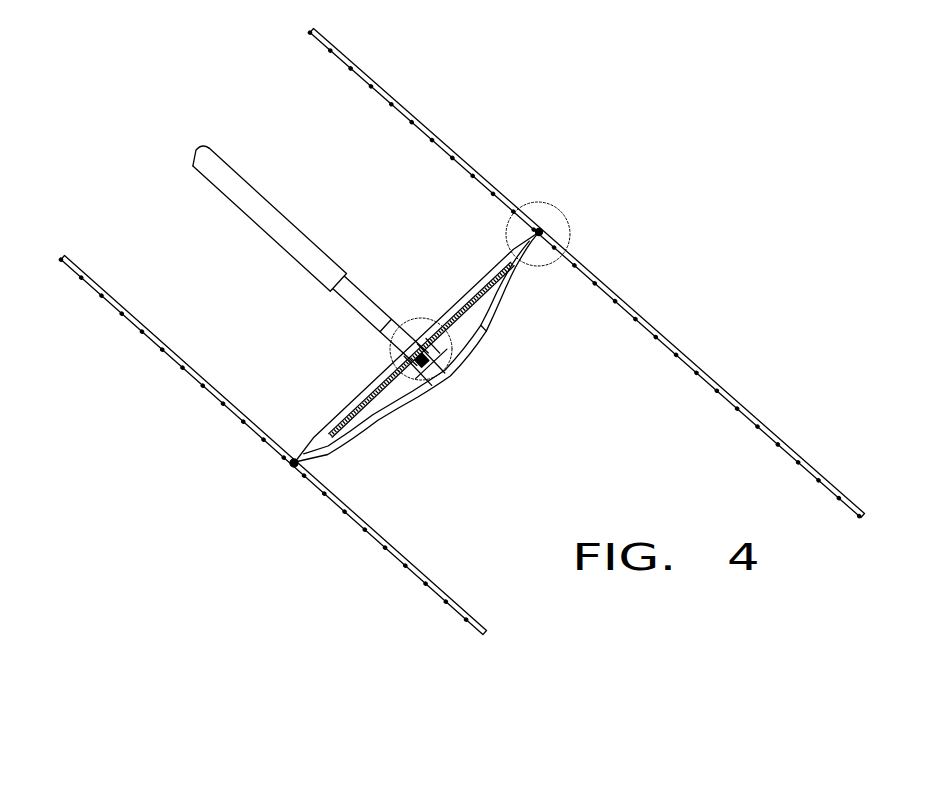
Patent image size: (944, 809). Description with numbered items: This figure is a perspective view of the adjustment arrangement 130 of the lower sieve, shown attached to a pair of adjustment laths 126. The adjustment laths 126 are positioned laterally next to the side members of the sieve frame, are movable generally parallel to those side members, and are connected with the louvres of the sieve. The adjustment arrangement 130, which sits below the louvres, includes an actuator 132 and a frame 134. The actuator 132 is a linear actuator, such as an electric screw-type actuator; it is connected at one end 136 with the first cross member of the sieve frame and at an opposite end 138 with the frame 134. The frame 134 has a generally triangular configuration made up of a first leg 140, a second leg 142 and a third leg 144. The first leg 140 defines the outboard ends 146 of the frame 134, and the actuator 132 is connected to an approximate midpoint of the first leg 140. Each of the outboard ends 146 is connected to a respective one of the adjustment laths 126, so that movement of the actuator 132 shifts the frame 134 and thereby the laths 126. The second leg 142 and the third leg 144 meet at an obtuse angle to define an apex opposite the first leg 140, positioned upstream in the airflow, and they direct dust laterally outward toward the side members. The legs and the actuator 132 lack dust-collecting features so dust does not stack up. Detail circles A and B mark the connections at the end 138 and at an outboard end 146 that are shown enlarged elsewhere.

The adjustment lath 126 is at (463, 333).
The adjustment arrangement 130 is at (308, 397).
The actuator 132 is at (306, 228).
The frame 134 is at (405, 404).
The end of actuator 136 is at (210, 177).
The opposite end of actuator 138 is at (407, 352).
The first leg 140 is at (476, 286).
The second leg 142 is at (380, 420).
The third leg 144 is at (486, 348).
The outboard ends 146 is at (540, 237).
The detail circle A is at (421, 317).
The detail circle B is at (562, 212).